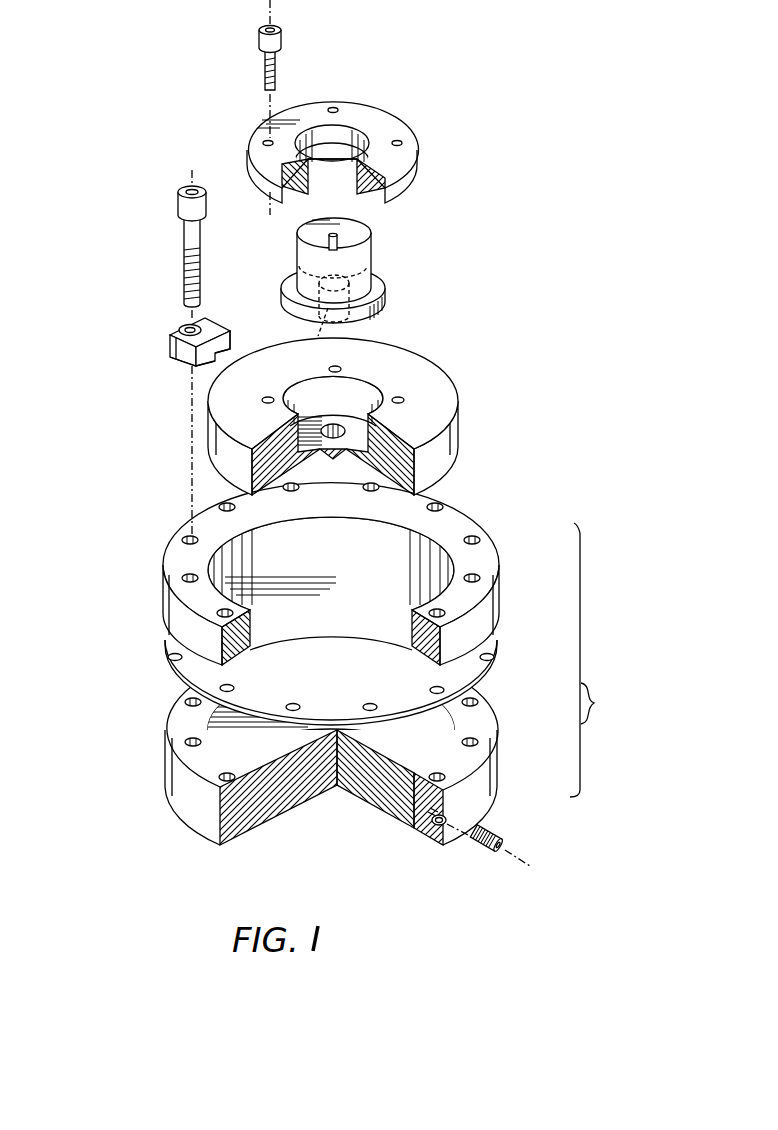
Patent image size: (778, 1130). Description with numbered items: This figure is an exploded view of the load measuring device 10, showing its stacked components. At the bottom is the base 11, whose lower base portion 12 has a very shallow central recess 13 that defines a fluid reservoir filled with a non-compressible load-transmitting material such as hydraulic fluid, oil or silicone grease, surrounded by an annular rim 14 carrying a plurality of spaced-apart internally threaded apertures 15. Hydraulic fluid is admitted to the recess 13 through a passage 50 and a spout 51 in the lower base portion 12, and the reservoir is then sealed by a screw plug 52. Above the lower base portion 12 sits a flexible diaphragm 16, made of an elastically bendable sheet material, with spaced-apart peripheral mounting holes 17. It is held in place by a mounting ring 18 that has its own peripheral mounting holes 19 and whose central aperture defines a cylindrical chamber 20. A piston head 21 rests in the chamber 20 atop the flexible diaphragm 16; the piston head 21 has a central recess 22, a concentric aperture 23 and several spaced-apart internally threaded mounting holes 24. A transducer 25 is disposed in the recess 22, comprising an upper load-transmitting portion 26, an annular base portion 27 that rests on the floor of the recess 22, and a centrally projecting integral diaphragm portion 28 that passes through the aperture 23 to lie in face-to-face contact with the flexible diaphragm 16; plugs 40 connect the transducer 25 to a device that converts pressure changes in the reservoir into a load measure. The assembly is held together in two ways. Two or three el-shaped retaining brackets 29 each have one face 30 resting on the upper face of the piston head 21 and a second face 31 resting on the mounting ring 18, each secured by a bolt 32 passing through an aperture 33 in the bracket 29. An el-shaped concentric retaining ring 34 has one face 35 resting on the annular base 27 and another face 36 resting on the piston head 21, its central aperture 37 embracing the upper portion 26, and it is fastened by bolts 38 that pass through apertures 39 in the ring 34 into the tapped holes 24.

The load measuring device 10 is at (510, 407).
The base 11 is at (606, 713).
The lower base portion 12 is at (177, 778).
The central recess 13 is at (207, 733).
The annular rim 14 is at (176, 721).
The internally threaded apertures 15 is at (184, 700).
The flexible diaphragm 16 is at (172, 633).
The peripheral mounting holes 17 is at (178, 657).
The mounting ring 18 is at (176, 553).
The peripheral mounting holes 19 is at (181, 578).
The cylindrical chamber 20 is at (338, 633).
The piston head 21 is at (196, 440).
The central recess 22 is at (386, 391).
The concentric aperture 23 is at (400, 401).
The internally threaded mounting holes 24 is at (388, 487).
The transducer 25 is at (395, 282).
The upper load-transmitting portion 26 is at (395, 265).
The annular base portion 27 is at (390, 303).
The diaphragm portion 28 is at (318, 336).
The el-shaped retaining bracket 29 is at (162, 351).
The face of retaining bracket 30 is at (230, 349).
The second face of retaining bracket 31 is at (185, 362).
The bolt 32 is at (170, 233).
The aperture 33 is at (178, 326).
The el-shaped concentric retaining ring 34 is at (240, 137).
The face of retaining ring 35 is at (327, 186).
The other face of retaining ring 36 is at (288, 187).
The central aperture 37 is at (333, 167).
The bolt 38 is at (240, 50).
The aperture 39 is at (338, 109).
The plug 40 is at (340, 243).
The passage 50 is at (416, 824).
The spout 51 is at (447, 838).
The screw plug 52 is at (504, 842).